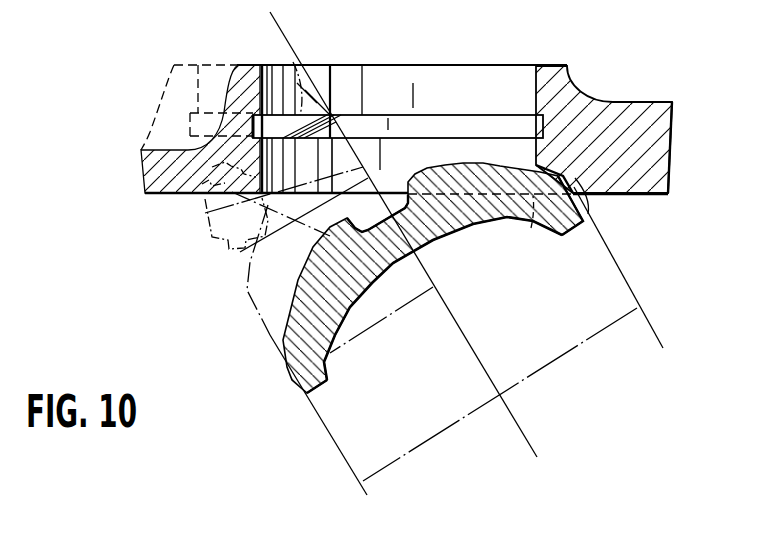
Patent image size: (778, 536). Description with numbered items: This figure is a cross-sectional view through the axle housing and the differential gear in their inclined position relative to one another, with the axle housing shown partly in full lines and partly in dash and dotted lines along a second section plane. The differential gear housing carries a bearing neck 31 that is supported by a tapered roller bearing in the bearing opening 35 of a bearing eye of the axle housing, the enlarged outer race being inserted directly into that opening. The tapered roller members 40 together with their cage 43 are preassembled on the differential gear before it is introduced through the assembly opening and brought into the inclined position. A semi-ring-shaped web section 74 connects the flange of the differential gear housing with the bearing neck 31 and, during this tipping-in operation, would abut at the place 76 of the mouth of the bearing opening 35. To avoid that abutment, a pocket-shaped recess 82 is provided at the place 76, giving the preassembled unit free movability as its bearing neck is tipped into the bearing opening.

The bearing neck 31 is at (306, 240).
The bearing opening 35 is at (536, 97).
The tapered roller members 40 is at (210, 240).
The cage 43 is at (298, 66).
The web section 74 is at (292, 368).
The place of the mouth 76 is at (530, 229).
The pocket-shaped recess 82 is at (592, 212).